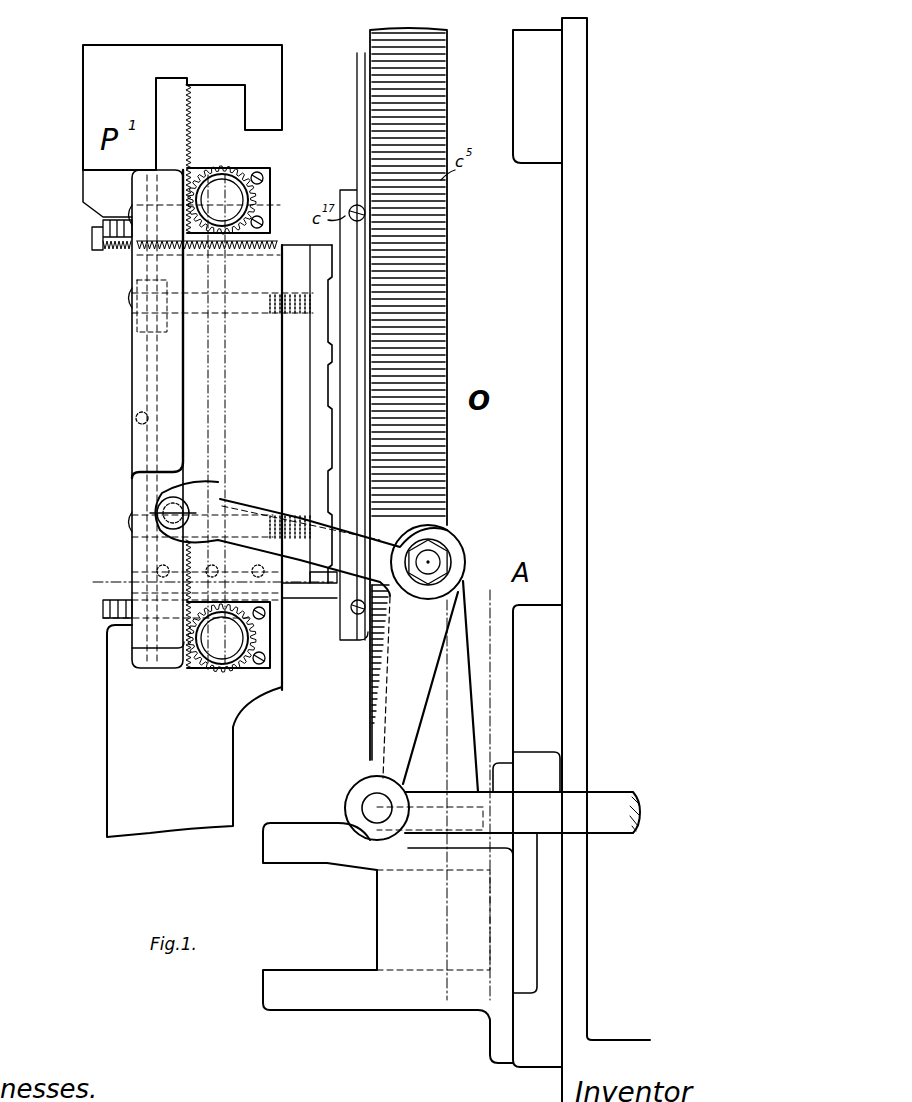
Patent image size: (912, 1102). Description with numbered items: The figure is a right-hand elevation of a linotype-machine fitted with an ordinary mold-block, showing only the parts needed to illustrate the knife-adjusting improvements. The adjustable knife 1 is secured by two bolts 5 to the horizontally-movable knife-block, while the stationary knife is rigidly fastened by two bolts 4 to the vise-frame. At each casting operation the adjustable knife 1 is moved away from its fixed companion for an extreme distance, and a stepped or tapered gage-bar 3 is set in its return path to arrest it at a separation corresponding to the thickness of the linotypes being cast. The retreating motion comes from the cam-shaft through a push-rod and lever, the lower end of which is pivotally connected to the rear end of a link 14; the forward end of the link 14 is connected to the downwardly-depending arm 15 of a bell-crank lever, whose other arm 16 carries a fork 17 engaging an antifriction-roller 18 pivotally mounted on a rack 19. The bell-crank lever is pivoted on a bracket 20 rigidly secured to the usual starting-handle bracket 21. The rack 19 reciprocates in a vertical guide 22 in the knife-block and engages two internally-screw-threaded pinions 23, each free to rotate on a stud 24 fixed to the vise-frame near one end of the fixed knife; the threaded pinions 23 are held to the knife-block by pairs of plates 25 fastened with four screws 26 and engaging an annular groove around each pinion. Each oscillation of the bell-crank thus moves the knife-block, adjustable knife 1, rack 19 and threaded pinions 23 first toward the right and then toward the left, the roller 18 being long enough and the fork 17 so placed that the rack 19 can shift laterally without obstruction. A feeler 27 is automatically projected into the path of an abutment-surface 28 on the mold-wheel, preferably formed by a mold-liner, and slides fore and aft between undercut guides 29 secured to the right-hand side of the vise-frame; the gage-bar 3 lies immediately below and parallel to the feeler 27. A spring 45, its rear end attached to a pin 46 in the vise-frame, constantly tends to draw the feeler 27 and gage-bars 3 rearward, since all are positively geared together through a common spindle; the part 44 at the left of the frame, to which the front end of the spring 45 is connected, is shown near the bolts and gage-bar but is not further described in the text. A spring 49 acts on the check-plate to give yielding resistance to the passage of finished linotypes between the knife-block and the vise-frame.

The adjustable knife 1 is at (307, 467).
The gage-bar 3 is at (86, 625).
The bolts 4 is at (309, 578).
The bolts 5 is at (130, 228).
The link 14 is at (607, 828).
The downwardly-depending arm of bell-crank lever 15 is at (393, 681).
The arm of bell-crank lever 16 is at (301, 523).
The fork 17 is at (301, 531).
The antifriction-roller 18 is at (193, 498).
The rack 19 is at (185, 382).
The bracket 20 is at (457, 633).
The starting-handle bracket 21 is at (388, 919).
The vertical guide 22 is at (130, 447).
The threaded pinions 23 is at (242, 172).
The stud 24 is at (222, 200).
The plates 25 is at (262, 196).
The screws 26 is at (263, 177).
The feeler 27 is at (300, 599).
The abutment-surface 28 is at (333, 600).
The undercut guides 29 is at (150, 572).
The bolt 44 is at (97, 238).
The spring 45 is at (103, 255).
The pin 46 is at (270, 246).
The spring 49 is at (134, 419).